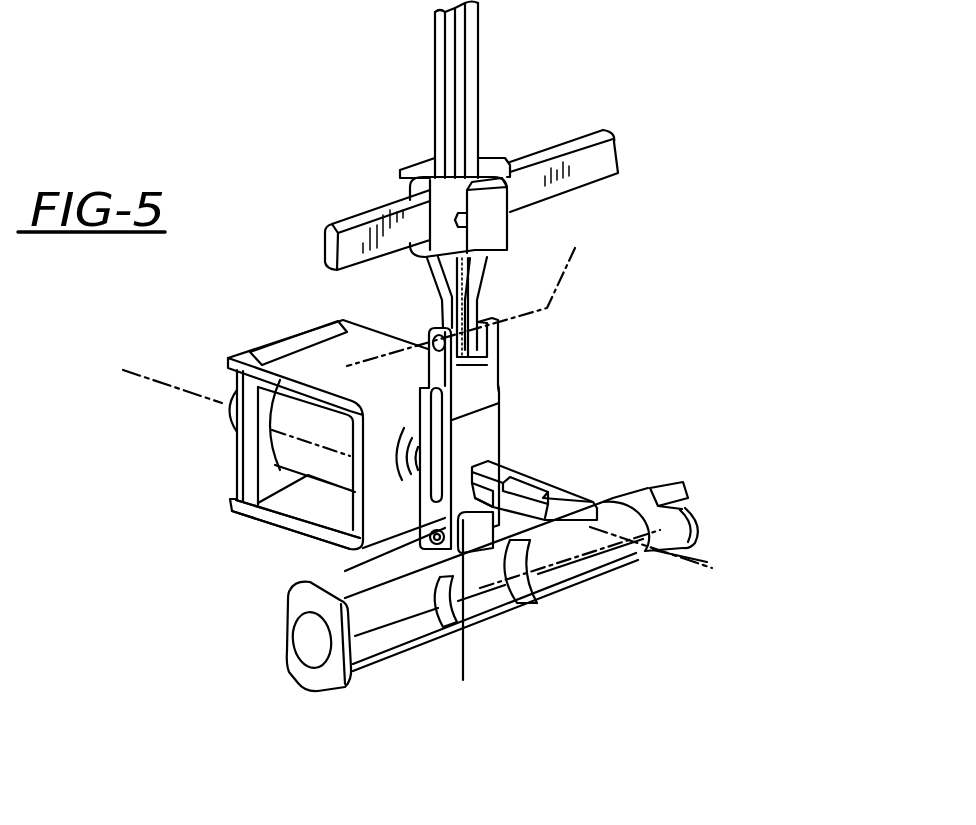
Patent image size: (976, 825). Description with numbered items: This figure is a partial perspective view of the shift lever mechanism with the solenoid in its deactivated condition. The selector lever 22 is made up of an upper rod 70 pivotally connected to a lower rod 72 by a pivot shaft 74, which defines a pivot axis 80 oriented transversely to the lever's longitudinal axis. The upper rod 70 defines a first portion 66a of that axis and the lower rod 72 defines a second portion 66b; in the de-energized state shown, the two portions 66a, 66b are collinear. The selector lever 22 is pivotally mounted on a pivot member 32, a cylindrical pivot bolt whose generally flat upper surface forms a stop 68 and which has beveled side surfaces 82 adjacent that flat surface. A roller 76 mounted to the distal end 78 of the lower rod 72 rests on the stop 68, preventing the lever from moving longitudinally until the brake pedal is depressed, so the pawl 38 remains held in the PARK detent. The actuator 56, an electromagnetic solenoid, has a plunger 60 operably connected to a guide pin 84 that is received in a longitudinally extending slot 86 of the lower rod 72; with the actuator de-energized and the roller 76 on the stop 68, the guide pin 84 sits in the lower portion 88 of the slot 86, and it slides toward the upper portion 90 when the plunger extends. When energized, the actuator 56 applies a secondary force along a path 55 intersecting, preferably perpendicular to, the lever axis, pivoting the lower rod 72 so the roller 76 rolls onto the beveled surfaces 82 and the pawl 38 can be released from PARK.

The selector lever 22 is at (530, 98).
The first portion of the longitudinal lever axis 66a is at (451, 79).
The upper rod 70 is at (443, 140).
The pawl 38 is at (603, 163).
The pivot axis 80 is at (470, 291).
The pivot shaft 74 is at (429, 331).
The lower rod 72 is at (499, 418).
The longitudinally extending slot 86 is at (499, 403).
The stop 68 is at (370, 559).
The plunger 60 is at (258, 505).
The lower portion of the slot 88 is at (318, 531).
The upper portion of the slot 90 is at (421, 396).
The path of the secondary force 55 is at (163, 380).
The actuator 56 is at (210, 431).
The guide pin 84 is at (445, 455).
The roller 76 is at (527, 598).
The beveled side surfaces 82 is at (480, 588).
The distal end of the lower rod 78 is at (565, 573).
The pivot member 32 is at (690, 533).
The second portion of the longitudinal lever axis 66b is at (460, 653).